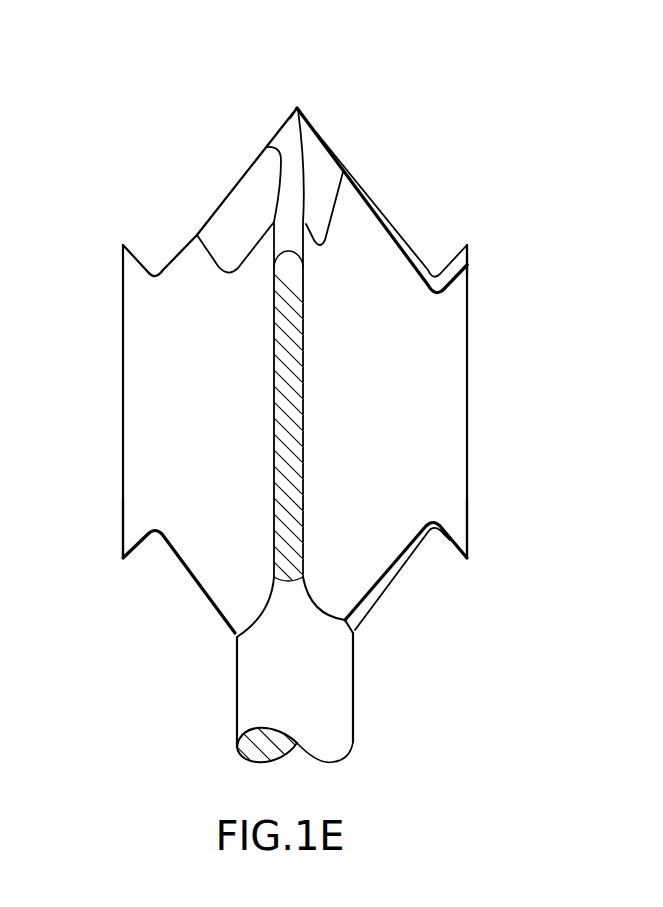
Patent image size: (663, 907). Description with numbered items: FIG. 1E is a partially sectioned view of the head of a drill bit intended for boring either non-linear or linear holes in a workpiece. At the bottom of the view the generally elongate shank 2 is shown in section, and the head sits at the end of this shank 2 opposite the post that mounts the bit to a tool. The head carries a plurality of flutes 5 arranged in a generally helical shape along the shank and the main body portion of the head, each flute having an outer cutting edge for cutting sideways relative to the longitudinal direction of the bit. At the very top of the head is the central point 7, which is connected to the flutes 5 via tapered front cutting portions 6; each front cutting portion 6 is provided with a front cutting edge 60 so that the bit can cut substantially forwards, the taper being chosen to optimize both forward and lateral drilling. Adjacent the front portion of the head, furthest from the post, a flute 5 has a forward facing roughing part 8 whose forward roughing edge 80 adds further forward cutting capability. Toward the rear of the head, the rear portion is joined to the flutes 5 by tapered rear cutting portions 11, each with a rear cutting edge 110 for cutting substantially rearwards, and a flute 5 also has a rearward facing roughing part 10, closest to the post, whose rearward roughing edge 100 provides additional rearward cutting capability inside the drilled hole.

The shank 2 is at (338, 730).
The flute 5 is at (448, 417).
The front cutting portion 6 is at (385, 210).
The central point 7 is at (298, 106).
The forward facing roughing part 8 is at (467, 247).
The rearward facing roughing part 10 is at (123, 558).
The rear cutting portion 11 is at (193, 575).
The front cutting edge 60 is at (367, 190).
The forward roughing edge 80 is at (452, 268).
The rearward roughing edge 100 is at (450, 539).
The rear cutting edge 110 is at (388, 577).